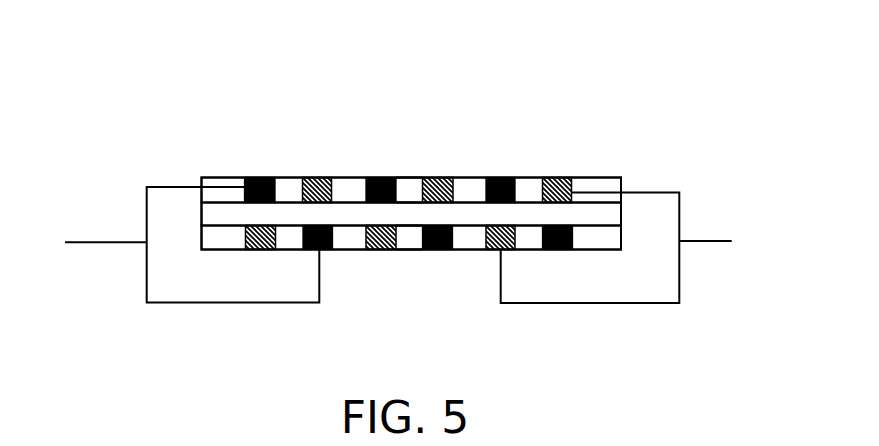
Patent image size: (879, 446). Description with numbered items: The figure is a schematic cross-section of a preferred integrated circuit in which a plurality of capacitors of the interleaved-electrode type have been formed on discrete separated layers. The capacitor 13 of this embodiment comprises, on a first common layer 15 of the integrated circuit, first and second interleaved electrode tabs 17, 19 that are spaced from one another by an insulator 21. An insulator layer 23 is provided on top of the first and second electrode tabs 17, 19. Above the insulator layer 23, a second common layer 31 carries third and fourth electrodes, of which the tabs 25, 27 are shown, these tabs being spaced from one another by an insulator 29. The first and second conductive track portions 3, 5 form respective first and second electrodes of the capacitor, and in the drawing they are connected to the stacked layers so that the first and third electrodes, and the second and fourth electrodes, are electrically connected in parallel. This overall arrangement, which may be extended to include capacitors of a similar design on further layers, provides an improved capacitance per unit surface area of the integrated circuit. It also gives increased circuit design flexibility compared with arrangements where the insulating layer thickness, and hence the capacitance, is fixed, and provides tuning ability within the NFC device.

The capacitor 13 is at (191, 152).
The first conductive track portion 3 is at (118, 244).
The second conductive track portion 5 is at (725, 242).
The first common layer 15 is at (607, 237).
The first electrode tab 17 is at (268, 241).
The second electrode tab 19 is at (554, 251).
The insulator 21 is at (405, 245).
The insulator layer 23 is at (617, 215).
The third electrode tab 25 is at (321, 188).
The fourth electrode tab 27 is at (498, 180).
The insulator 29 is at (411, 190).
The second common layer 31 is at (615, 186).